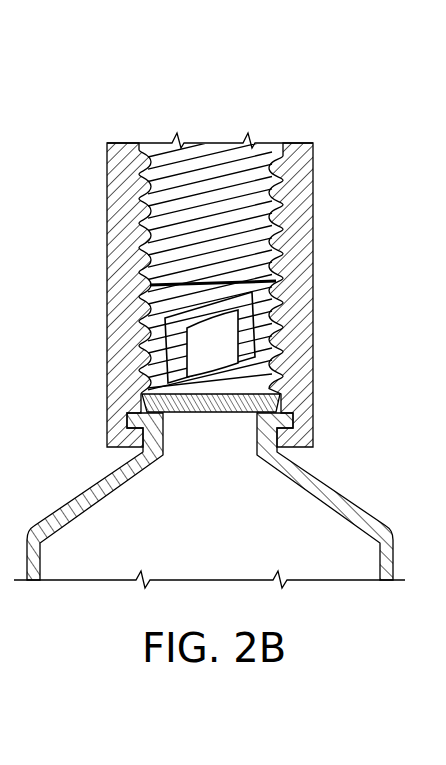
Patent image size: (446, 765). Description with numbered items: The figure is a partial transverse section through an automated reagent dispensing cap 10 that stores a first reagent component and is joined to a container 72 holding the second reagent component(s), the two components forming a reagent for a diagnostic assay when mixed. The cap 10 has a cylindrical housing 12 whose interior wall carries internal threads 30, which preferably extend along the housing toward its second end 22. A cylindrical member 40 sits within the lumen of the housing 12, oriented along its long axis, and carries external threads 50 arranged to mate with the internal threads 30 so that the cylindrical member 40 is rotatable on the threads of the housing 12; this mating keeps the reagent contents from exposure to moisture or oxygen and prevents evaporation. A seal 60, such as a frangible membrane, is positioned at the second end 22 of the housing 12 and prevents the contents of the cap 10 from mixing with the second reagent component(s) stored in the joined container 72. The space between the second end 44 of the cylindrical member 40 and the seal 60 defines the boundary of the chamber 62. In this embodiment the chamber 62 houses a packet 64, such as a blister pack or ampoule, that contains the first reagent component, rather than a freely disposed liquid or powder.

The automated reagent dispensing cap 10 is at (107, 88).
The cylindrical housing 12 is at (305, 187).
The second end 22 is at (138, 397).
The internal threads 30 is at (273, 379).
The cylindrical member 40 is at (272, 249).
The second end 44 is at (276, 284).
The external threads 50 is at (212, 200).
The seal 60 is at (275, 401).
The chamber 62 is at (258, 331).
The packet 64 is at (188, 340).
The container 72 is at (387, 561).